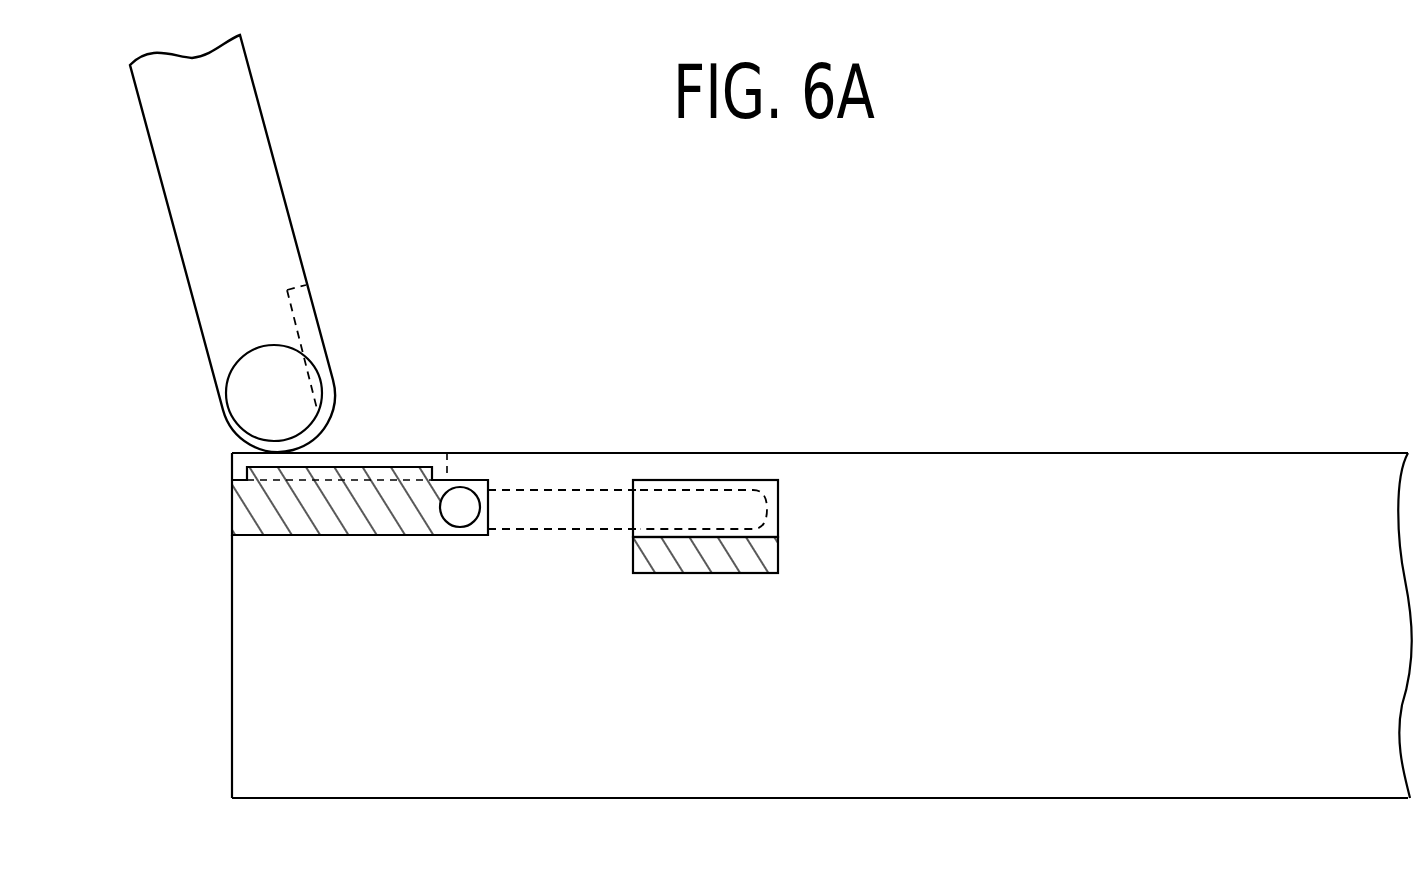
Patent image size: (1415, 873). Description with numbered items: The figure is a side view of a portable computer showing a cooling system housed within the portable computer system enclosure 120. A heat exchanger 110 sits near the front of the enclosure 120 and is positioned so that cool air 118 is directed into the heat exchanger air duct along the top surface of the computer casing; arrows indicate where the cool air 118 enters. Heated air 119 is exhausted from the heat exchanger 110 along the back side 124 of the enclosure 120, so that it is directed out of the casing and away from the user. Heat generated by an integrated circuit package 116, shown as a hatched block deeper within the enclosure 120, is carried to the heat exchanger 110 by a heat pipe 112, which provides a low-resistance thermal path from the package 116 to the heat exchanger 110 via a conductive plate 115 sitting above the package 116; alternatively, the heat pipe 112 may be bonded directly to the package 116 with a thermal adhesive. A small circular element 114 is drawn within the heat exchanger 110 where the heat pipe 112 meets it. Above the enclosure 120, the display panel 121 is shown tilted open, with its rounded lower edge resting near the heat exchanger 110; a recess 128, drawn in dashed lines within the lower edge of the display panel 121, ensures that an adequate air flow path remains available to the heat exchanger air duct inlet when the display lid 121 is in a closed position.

The heat exchanger 110 is at (368, 523).
The heat pipe 112 is at (565, 515).
The ball 114 is at (458, 515).
The conductive plate 115 is at (773, 500).
The integrated circuit package 116 is at (710, 560).
The cool air 118 is at (460, 420).
The heated air 119 is at (232, 488).
The portable computer system enclosure 120 is at (1105, 651).
The display panel 121 is at (228, 151).
The back side 124 is at (230, 677).
The recess 128 is at (307, 317).